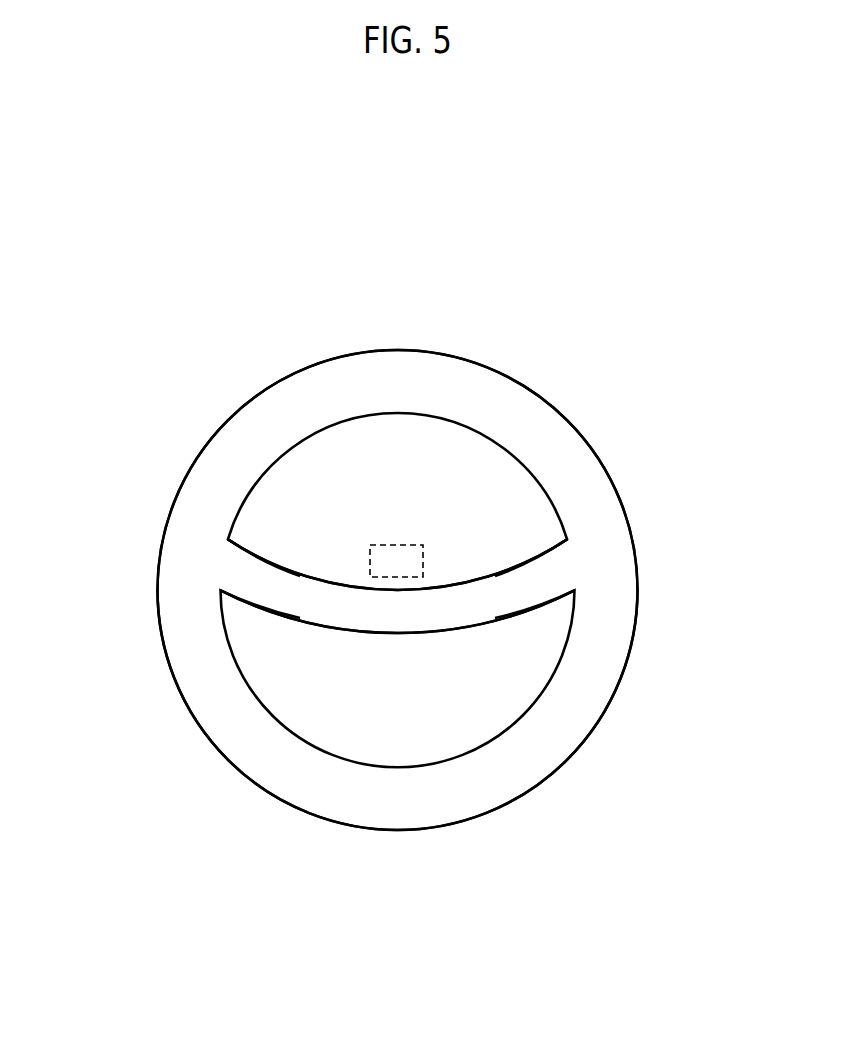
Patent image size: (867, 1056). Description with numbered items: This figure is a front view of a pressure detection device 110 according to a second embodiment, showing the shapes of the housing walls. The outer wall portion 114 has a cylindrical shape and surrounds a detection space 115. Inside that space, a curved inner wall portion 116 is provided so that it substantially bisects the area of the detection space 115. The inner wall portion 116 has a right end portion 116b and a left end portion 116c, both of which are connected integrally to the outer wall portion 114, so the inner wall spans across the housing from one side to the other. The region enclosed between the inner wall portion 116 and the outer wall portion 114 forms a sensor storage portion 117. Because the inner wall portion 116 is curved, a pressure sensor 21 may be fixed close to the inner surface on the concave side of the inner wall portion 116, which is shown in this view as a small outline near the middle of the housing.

The pressure detection device 110 is at (415, 330).
The outer wall portion 114 is at (590, 675).
The detection space 115 is at (430, 718).
The inner wall portion 116 is at (328, 605).
The right end portion 116b is at (552, 572).
The left end portion 116c is at (253, 578).
The sensor storage portion 117 is at (507, 487).
The pressure sensor 21 is at (393, 560).